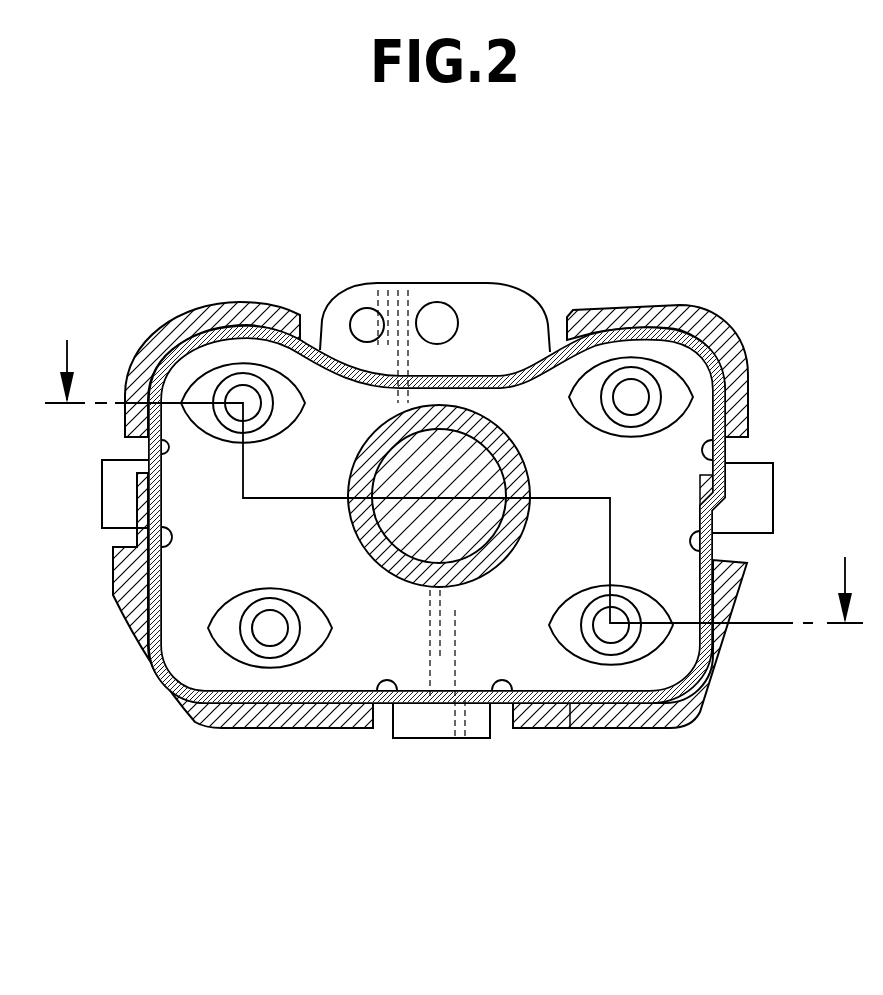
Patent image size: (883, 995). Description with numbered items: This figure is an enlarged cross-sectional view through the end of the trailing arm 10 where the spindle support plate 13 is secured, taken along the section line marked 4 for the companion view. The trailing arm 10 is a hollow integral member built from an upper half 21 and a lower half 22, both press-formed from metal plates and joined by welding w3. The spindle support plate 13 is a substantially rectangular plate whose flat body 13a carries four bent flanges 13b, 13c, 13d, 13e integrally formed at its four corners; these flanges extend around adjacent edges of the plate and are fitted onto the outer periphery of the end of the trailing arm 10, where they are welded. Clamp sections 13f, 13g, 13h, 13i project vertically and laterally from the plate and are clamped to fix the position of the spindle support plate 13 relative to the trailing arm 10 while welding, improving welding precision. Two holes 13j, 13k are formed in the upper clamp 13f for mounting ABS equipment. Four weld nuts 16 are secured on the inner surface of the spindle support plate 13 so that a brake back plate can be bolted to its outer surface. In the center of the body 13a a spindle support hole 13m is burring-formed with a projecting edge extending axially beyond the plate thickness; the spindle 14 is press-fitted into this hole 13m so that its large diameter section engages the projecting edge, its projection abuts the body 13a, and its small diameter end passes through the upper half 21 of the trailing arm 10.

The trailing arm 10 is at (528, 350).
The spindle support plate 13 is at (363, 657).
The flat body 13a is at (344, 576).
The bent flange 13b is at (205, 315).
The bent flange 13c is at (683, 307).
The bent flange 13d is at (688, 717).
The bent flange 13e is at (218, 730).
The clamp section 13f is at (457, 283).
The clamp section 13g is at (758, 480).
The clamp section 13h is at (430, 740).
The clamp section 13i is at (110, 512).
The hole 13j is at (367, 325).
The hole 13k is at (437, 323).
The spindle support hole 13m is at (507, 480).
The spindle 14 is at (475, 496).
The weld nut 16 is at (213, 425).
The upper half 21 is at (480, 372).
The lower half 22 is at (570, 728).
The welding w3 is at (143, 475).
The section line IV-IV 4 is at (453, 480).